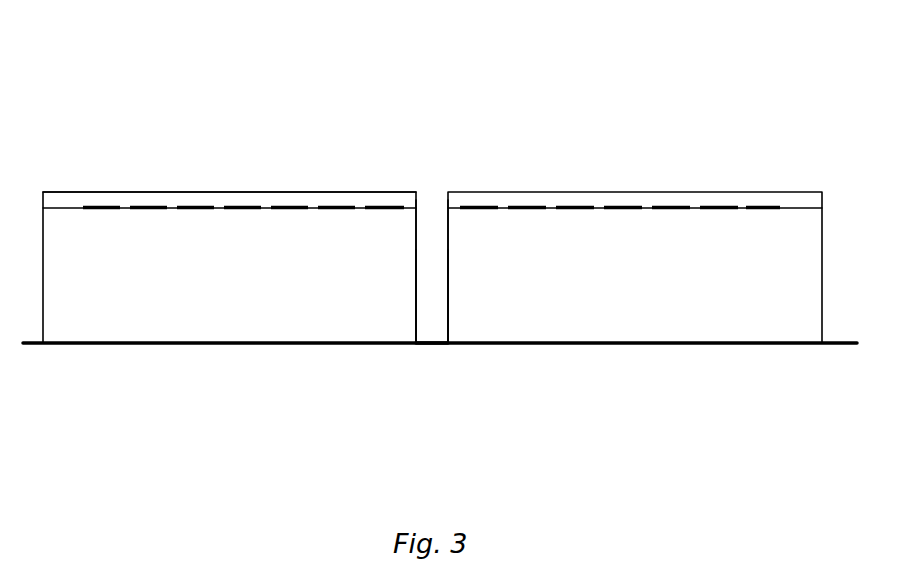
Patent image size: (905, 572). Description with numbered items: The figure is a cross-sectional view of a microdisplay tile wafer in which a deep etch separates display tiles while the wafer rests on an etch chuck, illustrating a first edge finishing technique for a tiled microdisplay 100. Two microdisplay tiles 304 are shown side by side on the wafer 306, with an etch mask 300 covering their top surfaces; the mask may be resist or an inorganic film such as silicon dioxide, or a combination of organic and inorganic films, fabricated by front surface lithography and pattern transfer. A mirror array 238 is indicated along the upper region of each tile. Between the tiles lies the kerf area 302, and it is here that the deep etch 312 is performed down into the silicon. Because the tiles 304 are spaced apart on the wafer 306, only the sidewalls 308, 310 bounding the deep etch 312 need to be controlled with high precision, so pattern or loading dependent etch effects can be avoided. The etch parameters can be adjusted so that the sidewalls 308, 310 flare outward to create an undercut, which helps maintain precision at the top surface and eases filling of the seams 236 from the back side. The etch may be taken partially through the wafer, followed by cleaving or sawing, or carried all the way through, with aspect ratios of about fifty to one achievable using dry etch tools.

The tiled microdisplay 100 is at (717, 118).
The seams 236 is at (435, 345).
The mirror array 238 is at (333, 207).
The etch mask 300 is at (373, 192).
The kerf areas 302 is at (23, 275).
The microdisplay tiles 304 is at (143, 237).
The wafer 306 is at (832, 263).
The sidewall 308 is at (416, 287).
The sidewall 310 is at (448, 285).
The deep etch 312 is at (432, 197).